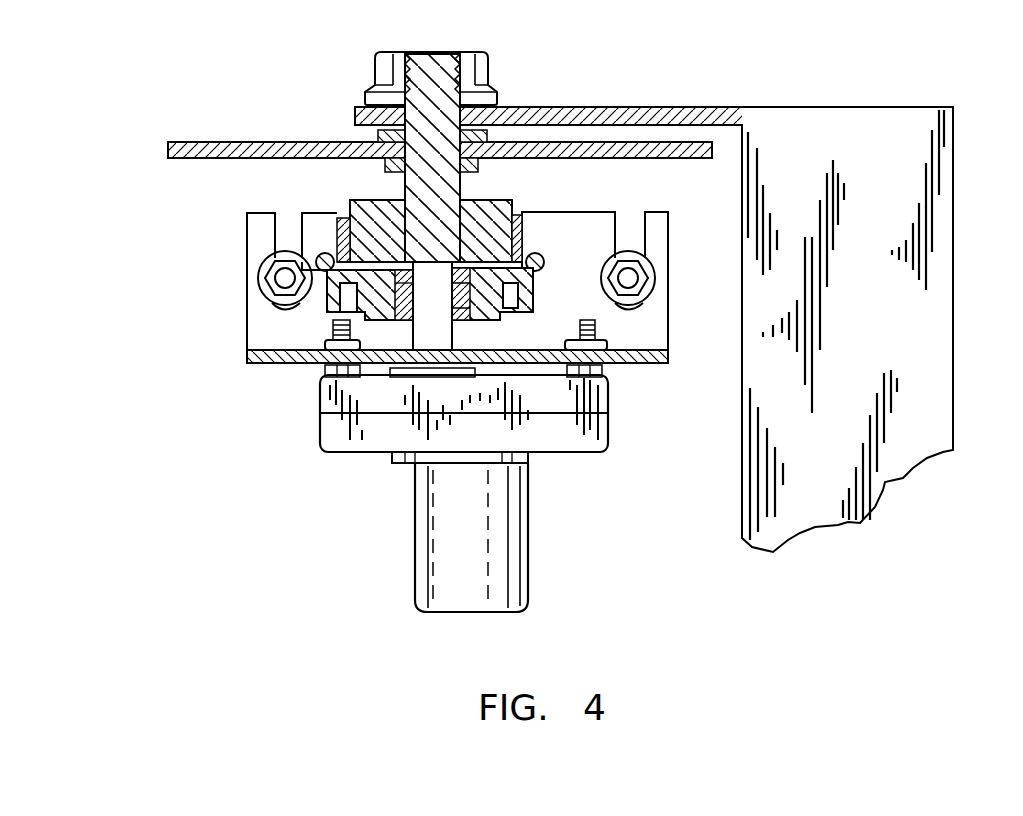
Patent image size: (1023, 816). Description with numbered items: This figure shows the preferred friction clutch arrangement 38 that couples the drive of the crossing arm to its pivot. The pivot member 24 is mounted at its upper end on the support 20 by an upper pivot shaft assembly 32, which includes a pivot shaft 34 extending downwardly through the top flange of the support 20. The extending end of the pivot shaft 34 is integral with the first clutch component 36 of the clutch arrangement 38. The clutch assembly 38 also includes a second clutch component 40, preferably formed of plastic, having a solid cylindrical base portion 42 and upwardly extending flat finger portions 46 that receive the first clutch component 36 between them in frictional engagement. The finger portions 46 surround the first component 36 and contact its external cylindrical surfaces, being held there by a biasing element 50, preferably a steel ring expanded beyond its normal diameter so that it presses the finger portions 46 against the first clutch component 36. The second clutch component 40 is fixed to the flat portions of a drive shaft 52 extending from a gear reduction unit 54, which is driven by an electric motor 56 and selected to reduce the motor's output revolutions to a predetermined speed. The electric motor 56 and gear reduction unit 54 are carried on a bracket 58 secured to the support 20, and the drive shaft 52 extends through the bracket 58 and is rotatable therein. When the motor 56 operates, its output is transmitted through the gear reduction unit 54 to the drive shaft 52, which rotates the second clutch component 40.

The support 20 is at (234, 140).
The pivot member 24 is at (805, 118).
The upper pivot shaft assembly 32 is at (512, 89).
The pivot shaft 34 is at (450, 188).
The first clutch component 36 is at (505, 210).
The friction clutch arrangement 38 is at (338, 199).
The second clutch component 40 is at (327, 317).
The solid cylindrical base portion 42 is at (522, 286).
The finger portions 46 is at (523, 249).
The biasing element 50 is at (542, 268).
The drive shaft 52 is at (458, 337).
The gear reduction unit 54 is at (578, 430).
The electric motor 56 is at (517, 520).
The bracket 58 is at (242, 358).